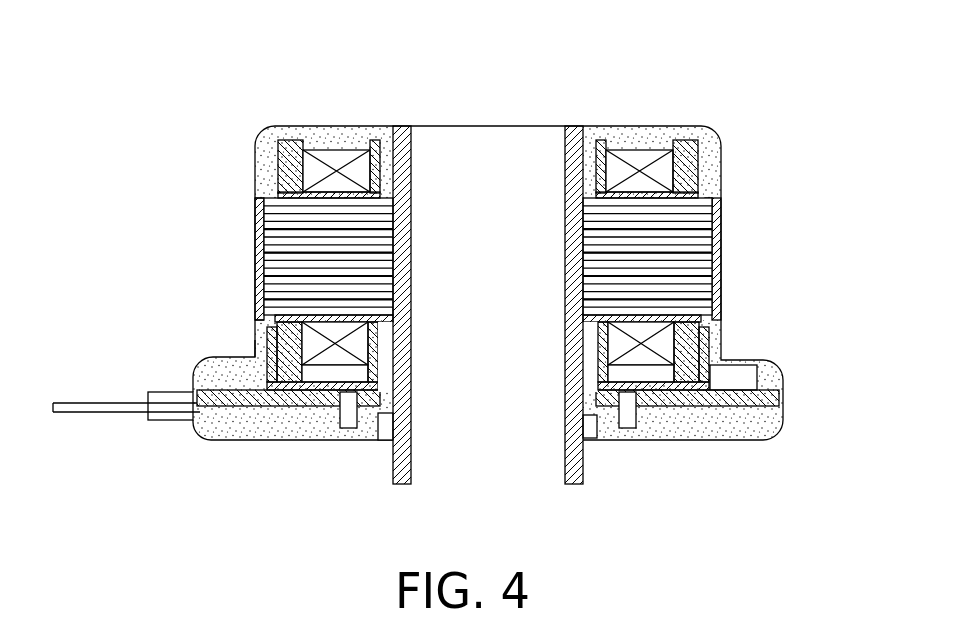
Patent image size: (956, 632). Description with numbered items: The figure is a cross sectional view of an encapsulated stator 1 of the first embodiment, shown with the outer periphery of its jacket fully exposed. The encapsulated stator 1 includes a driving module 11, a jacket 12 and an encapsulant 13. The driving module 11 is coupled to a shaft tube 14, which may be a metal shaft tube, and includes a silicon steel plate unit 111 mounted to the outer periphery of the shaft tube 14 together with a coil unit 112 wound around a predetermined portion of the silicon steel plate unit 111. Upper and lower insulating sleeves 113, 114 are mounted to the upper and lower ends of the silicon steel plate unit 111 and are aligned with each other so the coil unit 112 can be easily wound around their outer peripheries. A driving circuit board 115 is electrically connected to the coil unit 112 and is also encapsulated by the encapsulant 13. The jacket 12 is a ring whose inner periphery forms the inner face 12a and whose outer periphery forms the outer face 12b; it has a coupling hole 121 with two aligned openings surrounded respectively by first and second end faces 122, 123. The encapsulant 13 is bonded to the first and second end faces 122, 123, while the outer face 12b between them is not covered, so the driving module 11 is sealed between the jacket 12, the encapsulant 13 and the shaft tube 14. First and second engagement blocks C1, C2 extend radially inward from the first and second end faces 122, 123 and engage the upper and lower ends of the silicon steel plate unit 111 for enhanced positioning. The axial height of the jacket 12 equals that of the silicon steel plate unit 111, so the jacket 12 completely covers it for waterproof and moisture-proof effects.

The encapsulated stator 1 is at (754, 90).
The driving module 11 is at (635, 143).
The silicon steel plate unit 111 is at (692, 250).
The coil unit 112 is at (660, 143).
The upper insulating sleeve 113 is at (692, 168).
The lower insulating sleeve 114 is at (688, 353).
The driving circuit board 115 is at (748, 400).
The jacket 12 is at (230, 278).
The inner face 12a is at (273, 230).
The outer face 12b is at (255, 253).
The coupling hole 121 is at (270, 192).
The first end face 122 is at (258, 185).
The second end face 123 is at (255, 328).
The encapsulant 13 is at (323, 130).
The shaft tube 14 is at (573, 457).
The first engagement block C1 is at (717, 188).
The second engagement block C2 is at (255, 348).